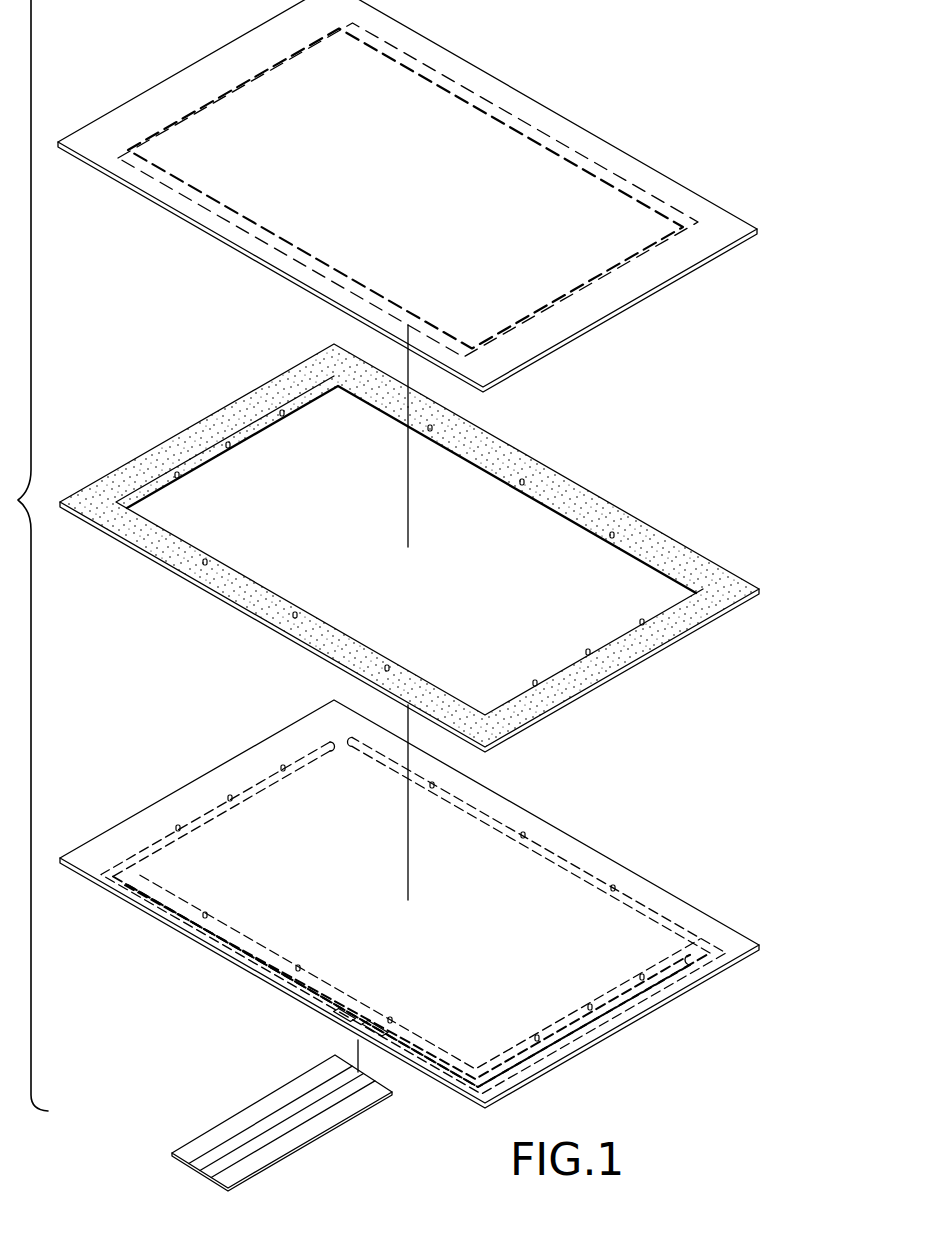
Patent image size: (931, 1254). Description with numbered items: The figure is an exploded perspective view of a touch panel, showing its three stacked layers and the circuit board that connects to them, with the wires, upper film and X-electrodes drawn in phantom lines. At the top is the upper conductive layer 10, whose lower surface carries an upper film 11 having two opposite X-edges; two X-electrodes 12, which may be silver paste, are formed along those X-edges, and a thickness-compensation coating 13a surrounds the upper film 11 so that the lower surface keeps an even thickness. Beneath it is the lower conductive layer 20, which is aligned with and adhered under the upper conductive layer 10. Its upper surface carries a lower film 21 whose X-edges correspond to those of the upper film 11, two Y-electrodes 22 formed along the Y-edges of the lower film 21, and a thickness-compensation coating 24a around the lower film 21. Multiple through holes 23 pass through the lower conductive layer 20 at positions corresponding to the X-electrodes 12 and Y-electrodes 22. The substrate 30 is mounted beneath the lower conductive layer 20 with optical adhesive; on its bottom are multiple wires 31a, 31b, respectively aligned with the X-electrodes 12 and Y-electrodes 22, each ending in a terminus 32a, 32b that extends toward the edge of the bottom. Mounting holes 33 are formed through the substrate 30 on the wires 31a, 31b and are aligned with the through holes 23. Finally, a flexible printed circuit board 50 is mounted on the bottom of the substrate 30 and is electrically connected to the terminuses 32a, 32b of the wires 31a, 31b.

The upper conductive layer 10 is at (656, 163).
The upper film 11 is at (572, 190).
The X-electrodes 12 is at (540, 130).
The thickness-compensation coating 13a is at (473, 77).
The lower conductive layer 20 is at (653, 524).
The lower film 21 is at (572, 545).
The Y-electrodes 22 is at (205, 455).
The through holes 23 is at (643, 618).
The thickness-compensation coating 24a is at (562, 487).
The substrate 30 is at (528, 797).
The wires 31a is at (548, 850).
The wires 31b is at (205, 815).
The terminus 32a is at (687, 963).
The terminus 32b is at (214, 935).
The mounting holes 33 is at (613, 888).
The flexible printed circuit board 50 is at (310, 1127).